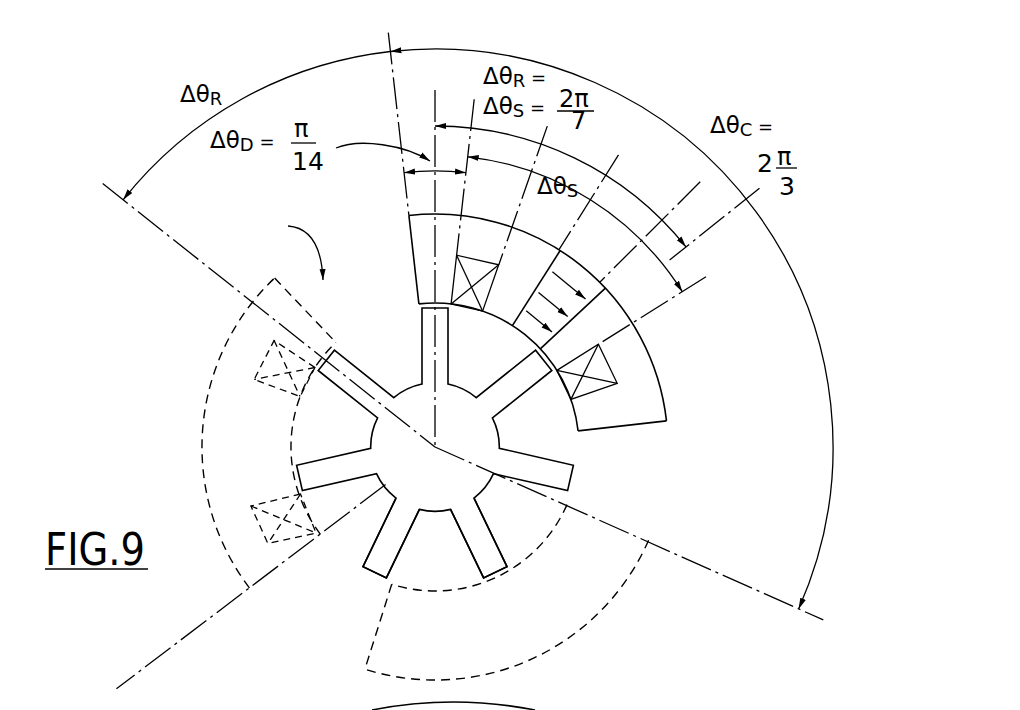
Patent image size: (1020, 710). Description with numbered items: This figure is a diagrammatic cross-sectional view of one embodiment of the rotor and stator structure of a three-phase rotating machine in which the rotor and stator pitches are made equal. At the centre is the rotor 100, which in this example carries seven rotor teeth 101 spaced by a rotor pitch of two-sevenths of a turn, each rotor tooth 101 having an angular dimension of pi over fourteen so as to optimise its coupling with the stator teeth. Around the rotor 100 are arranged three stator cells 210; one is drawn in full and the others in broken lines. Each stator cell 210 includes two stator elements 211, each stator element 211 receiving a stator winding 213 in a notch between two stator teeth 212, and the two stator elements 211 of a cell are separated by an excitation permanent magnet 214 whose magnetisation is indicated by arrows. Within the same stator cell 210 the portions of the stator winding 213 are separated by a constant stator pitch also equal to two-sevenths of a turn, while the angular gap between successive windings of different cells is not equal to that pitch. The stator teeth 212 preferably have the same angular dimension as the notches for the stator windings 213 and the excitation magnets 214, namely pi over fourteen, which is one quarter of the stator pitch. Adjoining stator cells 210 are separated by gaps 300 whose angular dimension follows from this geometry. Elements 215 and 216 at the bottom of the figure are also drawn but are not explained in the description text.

The rotor 100 is at (426, 437).
The rotor teeth 101 is at (482, 557).
The stator cell 210 is at (273, 452).
The stator element 211 is at (641, 338).
The stator teeth 212 is at (418, 297).
The stator winding 213 is at (452, 267).
The excitation permanent magnet 214 is at (522, 334).
The housing ring 215 is at (426, 695).
The connecting member 216 is at (268, 707).
The gap 300 is at (281, 247).